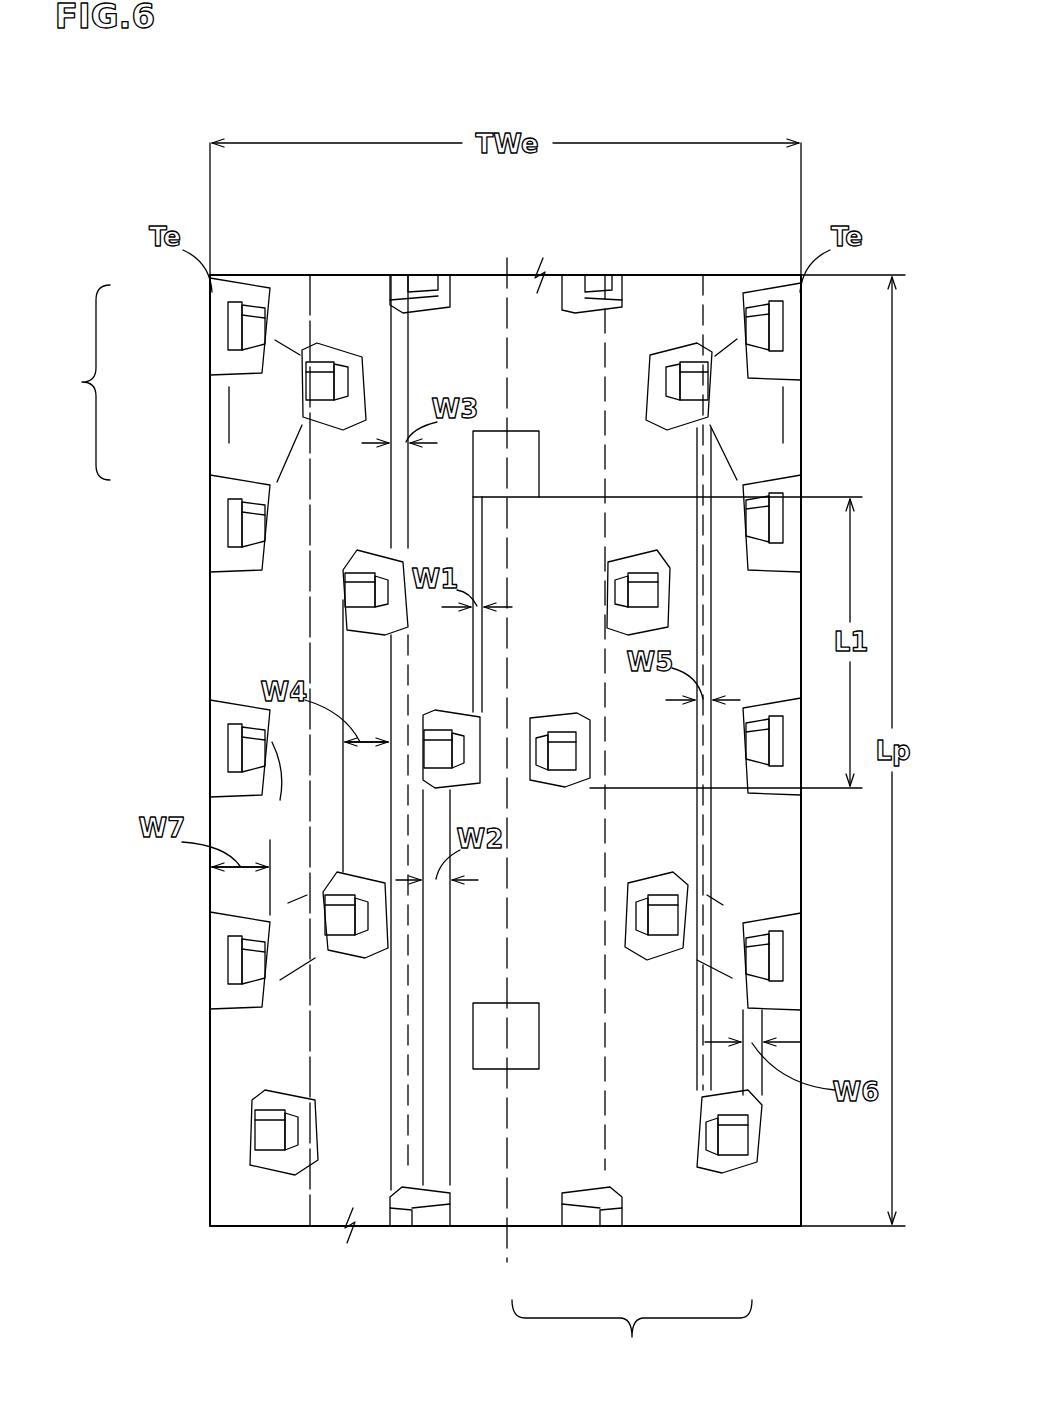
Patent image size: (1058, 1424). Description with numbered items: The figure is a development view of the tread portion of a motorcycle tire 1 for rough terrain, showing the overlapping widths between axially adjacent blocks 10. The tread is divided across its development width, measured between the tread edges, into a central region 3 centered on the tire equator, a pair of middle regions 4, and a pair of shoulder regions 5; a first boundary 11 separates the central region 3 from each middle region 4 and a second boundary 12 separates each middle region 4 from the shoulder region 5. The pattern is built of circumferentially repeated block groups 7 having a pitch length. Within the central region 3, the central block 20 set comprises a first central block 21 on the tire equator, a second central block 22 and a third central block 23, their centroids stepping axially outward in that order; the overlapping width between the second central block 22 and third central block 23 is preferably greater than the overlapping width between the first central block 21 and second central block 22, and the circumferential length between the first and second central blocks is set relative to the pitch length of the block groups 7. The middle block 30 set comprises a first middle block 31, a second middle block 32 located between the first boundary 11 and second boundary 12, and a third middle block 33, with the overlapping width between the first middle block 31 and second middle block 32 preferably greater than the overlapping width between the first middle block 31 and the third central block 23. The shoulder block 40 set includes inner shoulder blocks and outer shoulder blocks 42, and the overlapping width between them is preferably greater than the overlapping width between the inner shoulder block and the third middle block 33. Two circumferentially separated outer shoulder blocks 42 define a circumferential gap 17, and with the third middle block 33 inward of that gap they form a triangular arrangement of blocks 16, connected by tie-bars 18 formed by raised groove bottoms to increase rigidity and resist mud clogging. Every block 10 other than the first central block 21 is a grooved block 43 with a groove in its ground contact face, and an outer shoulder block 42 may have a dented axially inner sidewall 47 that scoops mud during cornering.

The motorcycle tire 1 is at (656, 258).
The central region 3 is at (480, 300).
The middle region 4 is at (360, 300).
The shoulder region 5 is at (266, 300).
The block group 7 is at (250, 265).
The block 10 is at (632, 1338).
The first boundary 11 is at (385, 290).
The second boundary 12 is at (320, 265).
The triangular arrangement of blocks 16 is at (72, 382).
The circumferential gap 17 is at (224, 430).
The tie-bar 18 is at (268, 418).
The central block 20 is at (525, 1062).
The first central block 21 is at (535, 470).
The second central block 22 is at (444, 748).
The third central block 23 is at (421, 272).
The middle block 30 is at (645, 940).
The first middle block 31 is at (362, 592).
The second middle block 32 is at (345, 912).
The third middle block 33 is at (332, 380).
The shoulder block 40 is at (722, 1142).
The outer shoulder block 42 is at (240, 322).
The grooved block 43 is at (285, 1132).
The axially inner sidewall 47 is at (265, 800).